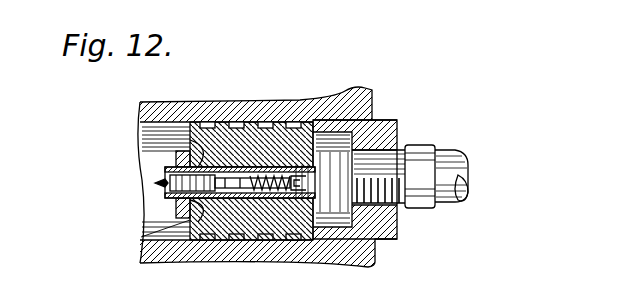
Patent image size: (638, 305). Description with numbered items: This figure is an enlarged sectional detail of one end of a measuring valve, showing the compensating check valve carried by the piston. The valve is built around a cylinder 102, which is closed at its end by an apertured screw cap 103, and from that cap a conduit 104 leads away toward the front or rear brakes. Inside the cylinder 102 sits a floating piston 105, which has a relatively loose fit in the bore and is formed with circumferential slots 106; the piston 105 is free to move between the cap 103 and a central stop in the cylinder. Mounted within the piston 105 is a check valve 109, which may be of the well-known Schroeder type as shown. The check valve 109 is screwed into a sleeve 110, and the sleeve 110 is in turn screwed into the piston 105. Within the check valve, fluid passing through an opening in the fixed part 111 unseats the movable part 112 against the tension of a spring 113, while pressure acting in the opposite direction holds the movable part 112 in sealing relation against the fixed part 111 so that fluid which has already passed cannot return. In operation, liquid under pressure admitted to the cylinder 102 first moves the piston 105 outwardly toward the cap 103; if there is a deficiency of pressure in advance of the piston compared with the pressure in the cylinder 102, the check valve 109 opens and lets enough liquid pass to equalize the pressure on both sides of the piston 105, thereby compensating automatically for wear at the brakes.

The cylinder 102 is at (258, 102).
The apertured screw cap 103 is at (378, 120).
The conduit 104 is at (468, 152).
The floating piston 105 is at (278, 124).
The circumferential slot 106 is at (210, 125).
The check valve 109 is at (140, 240).
The sleeve 110 is at (244, 210).
The fixed part of the valve 111 is at (215, 170).
The movable part 112 is at (230, 172).
The spring 113 is at (268, 172).